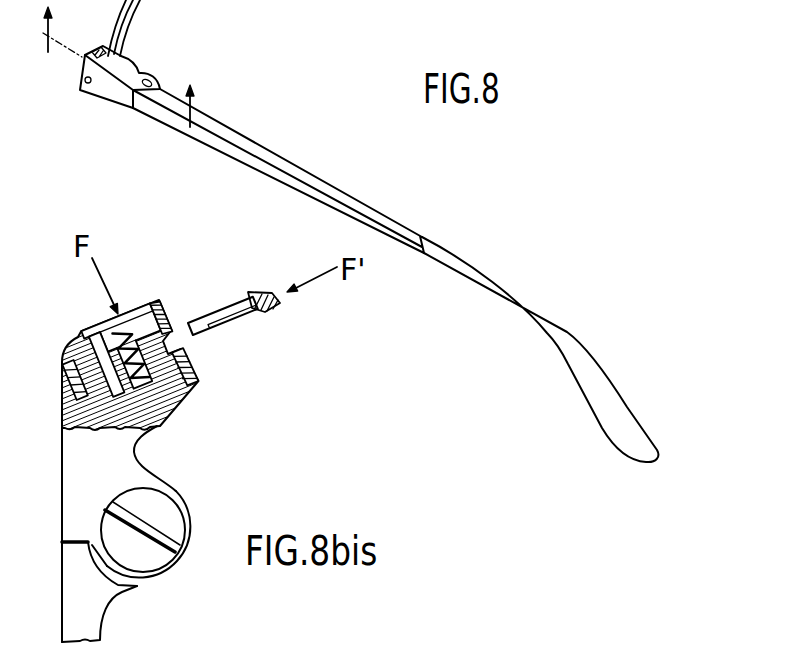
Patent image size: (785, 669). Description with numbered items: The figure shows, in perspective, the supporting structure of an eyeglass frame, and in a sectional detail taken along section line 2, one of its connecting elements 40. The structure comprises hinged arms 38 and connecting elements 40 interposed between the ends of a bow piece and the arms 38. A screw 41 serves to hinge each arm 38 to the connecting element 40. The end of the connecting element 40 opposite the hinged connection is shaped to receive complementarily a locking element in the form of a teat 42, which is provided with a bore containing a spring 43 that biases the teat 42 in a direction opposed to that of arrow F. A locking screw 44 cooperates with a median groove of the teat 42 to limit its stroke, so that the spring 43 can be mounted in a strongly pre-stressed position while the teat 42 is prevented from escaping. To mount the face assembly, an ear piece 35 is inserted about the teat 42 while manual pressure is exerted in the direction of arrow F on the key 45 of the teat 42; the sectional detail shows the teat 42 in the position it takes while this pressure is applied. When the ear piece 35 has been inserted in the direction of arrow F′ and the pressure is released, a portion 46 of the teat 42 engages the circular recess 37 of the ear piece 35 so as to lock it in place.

In FIG. 8, the section line 2 is at (192, 88).
In FIG. 8bis, the ear piece 35 is at (230, 303).
In FIG. 8bis, the circular recess 37 is at (260, 313).
In FIG. 8, the hinged arm 38 is at (320, 197).
In FIG. 8bis, the hinged arm 38 is at (96, 606).
In FIG. 8, the connecting element 40 is at (127, 70).
In FIG. 8bis, the connecting element 40 is at (78, 458).
In FIG. 8bis, the screw 41 is at (162, 520).
In FIG. 8, the teat 42 is at (110, 50).
In FIG. 8bis, the teat 42 is at (143, 312).
In FIG. 8bis, the spring 43 is at (153, 413).
In FIG. 8, the locking screw 44 is at (87, 86).
In FIG. 8bis, the locking screw 44 is at (67, 368).
In FIG. 8bis, the key 45 is at (100, 322).
In FIG. 8bis, the portion of the teat 46 is at (168, 352).